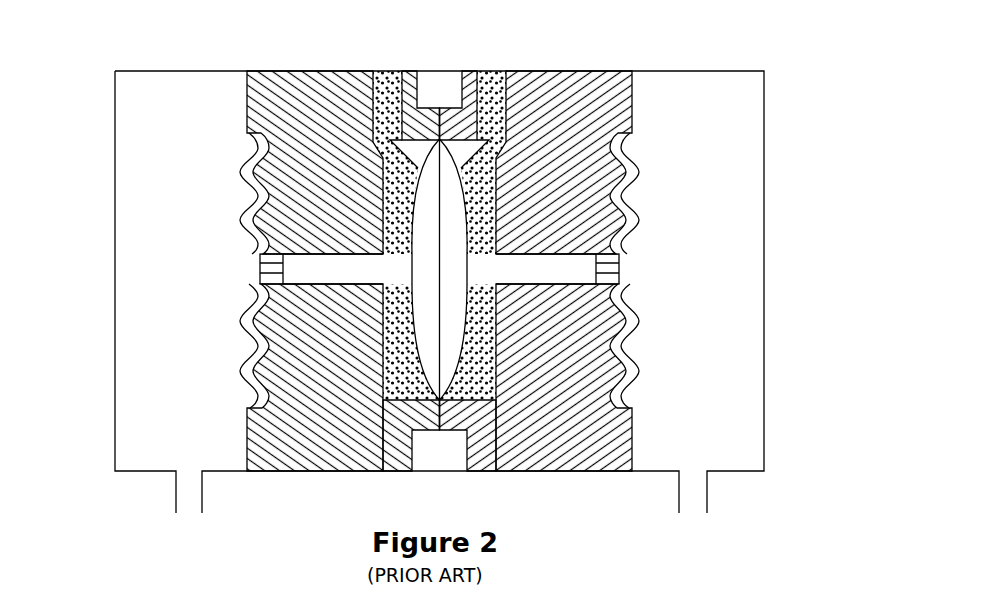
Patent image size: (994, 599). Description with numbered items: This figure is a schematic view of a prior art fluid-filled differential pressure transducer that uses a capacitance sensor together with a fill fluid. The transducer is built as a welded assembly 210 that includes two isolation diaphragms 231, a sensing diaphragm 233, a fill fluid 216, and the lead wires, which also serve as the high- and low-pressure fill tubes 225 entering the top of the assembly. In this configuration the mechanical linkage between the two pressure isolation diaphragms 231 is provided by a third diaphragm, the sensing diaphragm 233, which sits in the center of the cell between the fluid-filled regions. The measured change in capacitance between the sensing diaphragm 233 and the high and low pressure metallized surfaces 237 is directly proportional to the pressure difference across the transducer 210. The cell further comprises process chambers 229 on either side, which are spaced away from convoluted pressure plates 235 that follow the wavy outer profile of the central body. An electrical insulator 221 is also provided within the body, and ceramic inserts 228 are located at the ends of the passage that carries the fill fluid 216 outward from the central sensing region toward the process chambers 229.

The welded assembly 210 is at (90, 85).
The process chamber 229 is at (132, 276).
The electrical insulator 221 is at (493, 143).
The isolation diaphragm 231 is at (248, 208).
The convoluted pressure plate 235 is at (250, 300).
The ceramic insert 228 is at (260, 267).
The fill fluid 216 is at (316, 274).
The fill tube 225 is at (385, 66).
The metallized surface 237 is at (456, 338).
The sensing diaphragm 233 is at (435, 313).